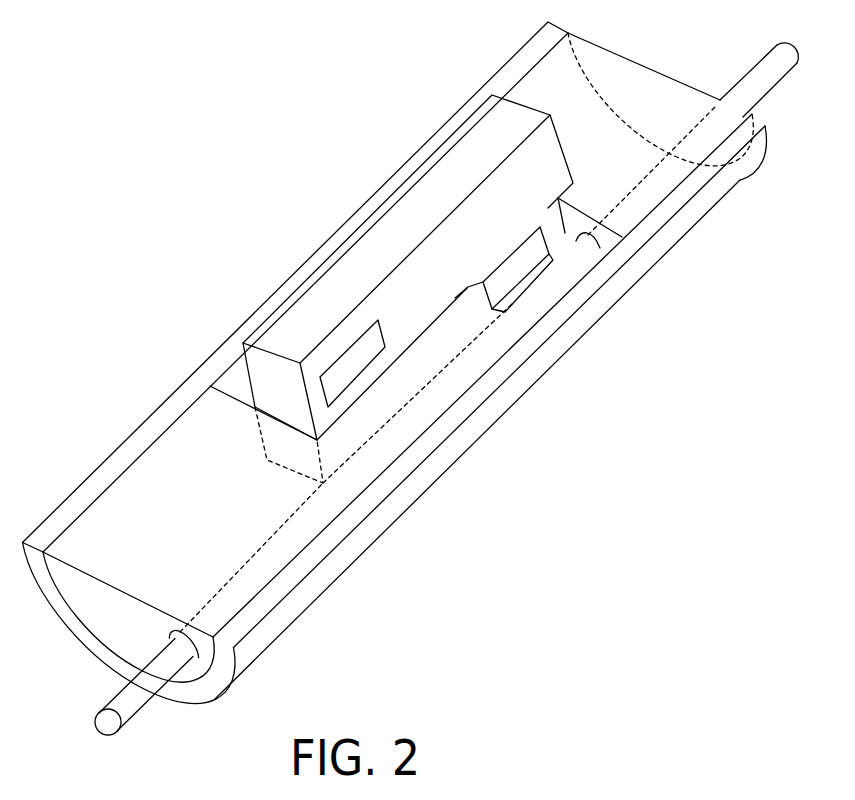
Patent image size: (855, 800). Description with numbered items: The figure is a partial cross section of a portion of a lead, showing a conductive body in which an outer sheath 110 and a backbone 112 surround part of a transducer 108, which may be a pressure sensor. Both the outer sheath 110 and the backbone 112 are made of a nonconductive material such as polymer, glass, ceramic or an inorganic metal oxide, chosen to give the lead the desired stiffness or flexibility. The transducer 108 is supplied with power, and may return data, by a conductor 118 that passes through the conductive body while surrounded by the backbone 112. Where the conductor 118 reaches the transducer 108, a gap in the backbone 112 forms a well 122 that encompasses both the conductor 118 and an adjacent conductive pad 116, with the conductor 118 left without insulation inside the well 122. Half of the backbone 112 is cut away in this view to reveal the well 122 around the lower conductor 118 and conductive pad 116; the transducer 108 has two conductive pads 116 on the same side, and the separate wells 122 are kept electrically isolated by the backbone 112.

The transducer 108 is at (367, 253).
The outer sheath 110 is at (390, 505).
The backbone 112 is at (172, 492).
The conductive pad 116 is at (487, 88).
The conductor 118 is at (783, 89).
The well 122 is at (537, 210).